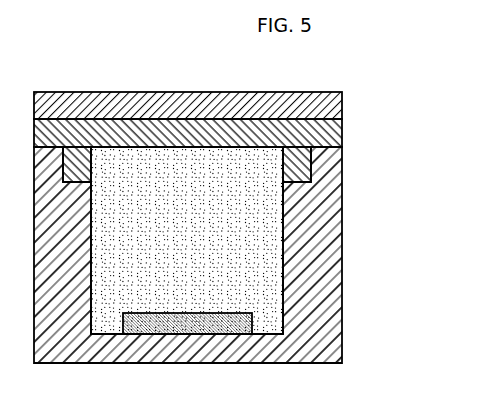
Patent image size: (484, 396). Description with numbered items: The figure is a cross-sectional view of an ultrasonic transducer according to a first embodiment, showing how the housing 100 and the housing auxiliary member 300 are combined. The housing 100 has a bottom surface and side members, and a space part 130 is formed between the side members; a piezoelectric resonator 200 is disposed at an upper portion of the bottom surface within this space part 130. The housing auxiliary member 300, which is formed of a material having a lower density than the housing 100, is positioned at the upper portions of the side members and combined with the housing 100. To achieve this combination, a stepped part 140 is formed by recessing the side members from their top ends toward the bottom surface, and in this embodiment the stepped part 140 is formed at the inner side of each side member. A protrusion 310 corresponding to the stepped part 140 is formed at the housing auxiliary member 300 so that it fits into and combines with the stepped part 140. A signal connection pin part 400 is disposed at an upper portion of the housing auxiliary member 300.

The housing 100 is at (317, 237).
The space part 130 is at (253, 277).
The stepped part 140 is at (300, 182).
The piezoelectric resonator 200 is at (242, 323).
The housing auxiliary member 300 is at (333, 135).
The protrusion 310 is at (307, 165).
The signal connection pin part 400 is at (330, 105).